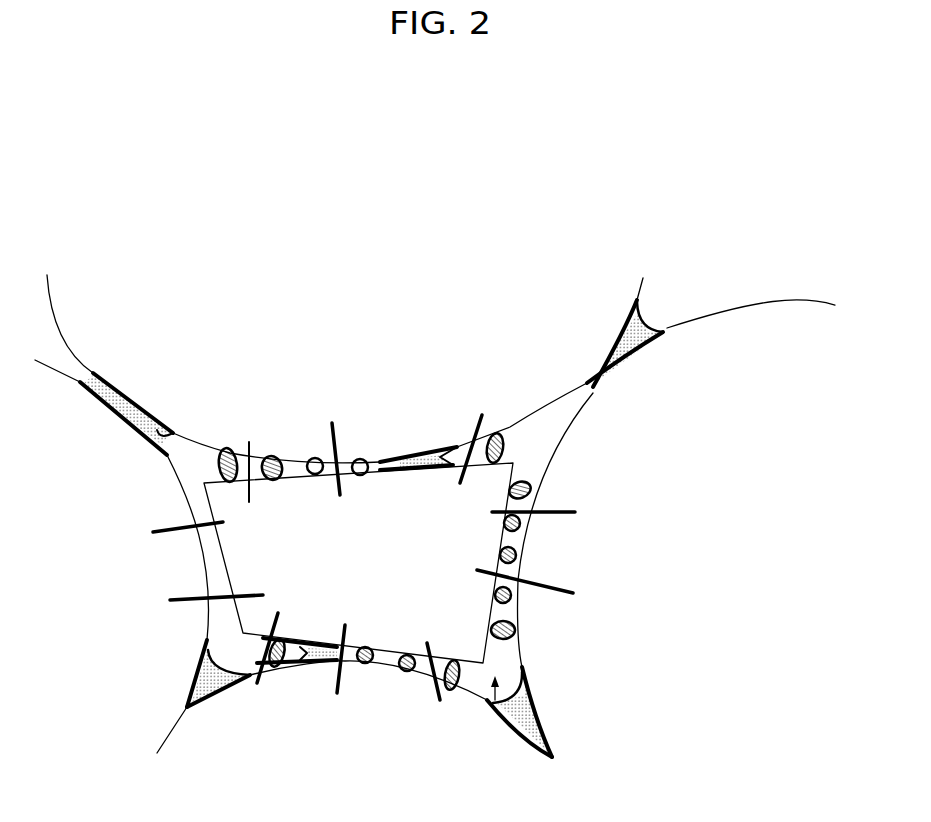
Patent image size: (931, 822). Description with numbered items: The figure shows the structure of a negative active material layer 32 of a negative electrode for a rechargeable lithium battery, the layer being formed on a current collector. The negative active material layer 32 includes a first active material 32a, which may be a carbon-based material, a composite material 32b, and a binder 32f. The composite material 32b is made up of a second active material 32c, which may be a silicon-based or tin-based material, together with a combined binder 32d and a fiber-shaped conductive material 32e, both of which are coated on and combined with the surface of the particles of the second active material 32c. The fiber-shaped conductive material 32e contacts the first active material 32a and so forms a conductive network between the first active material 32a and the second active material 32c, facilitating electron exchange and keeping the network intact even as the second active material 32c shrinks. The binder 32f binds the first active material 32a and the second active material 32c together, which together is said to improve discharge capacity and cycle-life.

The negative active material layer 32 is at (704, 233).
The first active material 32a is at (282, 720).
The composite material 32b is at (495, 710).
The second active material 32c is at (387, 670).
The combined binder 32d is at (503, 443).
The fiber-shaped conductive material 32e is at (560, 580).
The binder 32f is at (140, 410).